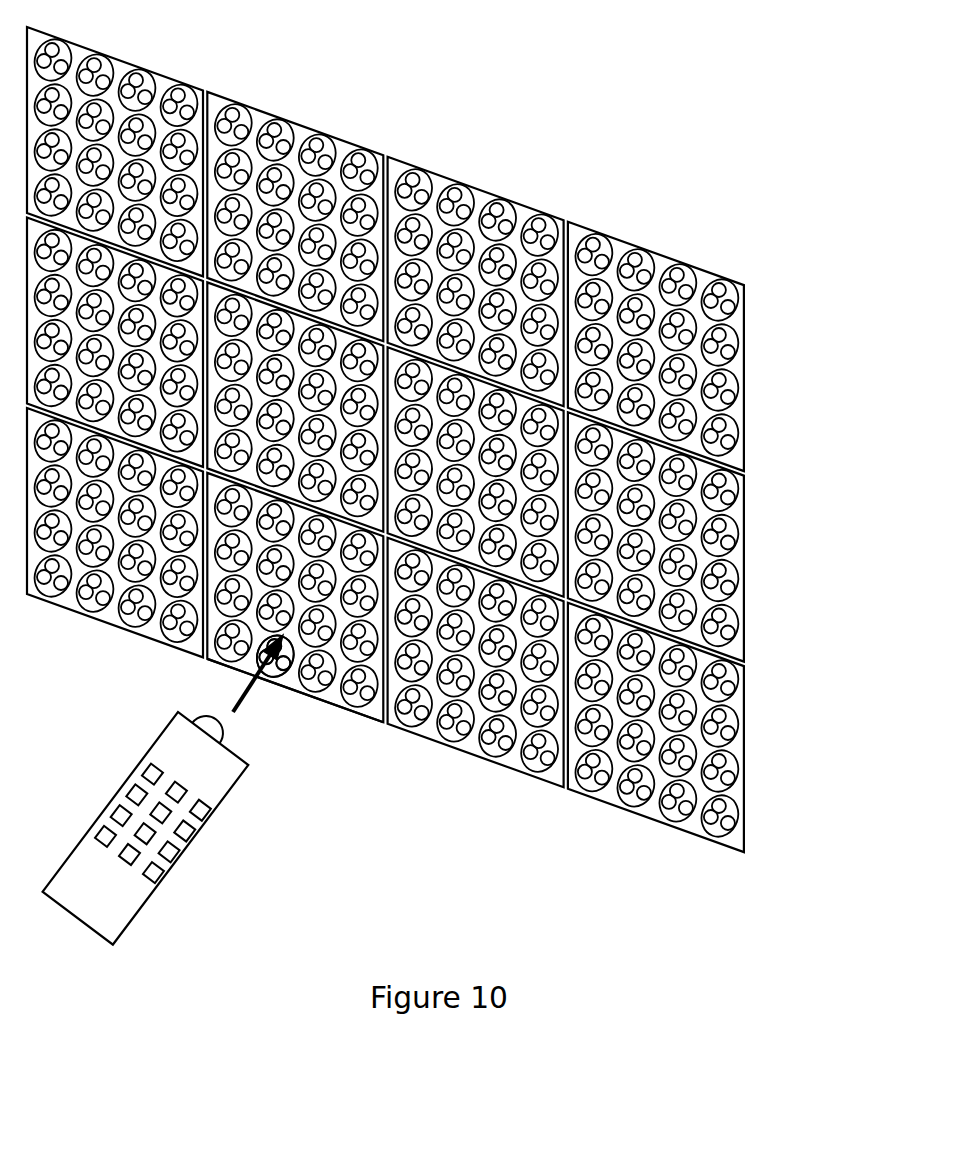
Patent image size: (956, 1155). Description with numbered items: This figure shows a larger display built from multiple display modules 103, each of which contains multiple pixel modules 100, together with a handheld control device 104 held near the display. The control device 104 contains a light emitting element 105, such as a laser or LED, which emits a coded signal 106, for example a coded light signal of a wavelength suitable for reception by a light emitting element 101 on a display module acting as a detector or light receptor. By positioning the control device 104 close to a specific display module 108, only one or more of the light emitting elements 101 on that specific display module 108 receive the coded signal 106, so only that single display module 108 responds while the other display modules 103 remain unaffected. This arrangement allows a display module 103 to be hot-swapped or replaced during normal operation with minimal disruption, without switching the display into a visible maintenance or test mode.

The pixel module 100 is at (436, 455).
The light emitting element 101 is at (262, 623).
The display module 103 is at (740, 328).
The control device 104 is at (143, 895).
The light emitting element 105 is at (223, 735).
The coded signal 106 is at (237, 688).
The specific display module 108 is at (375, 713).